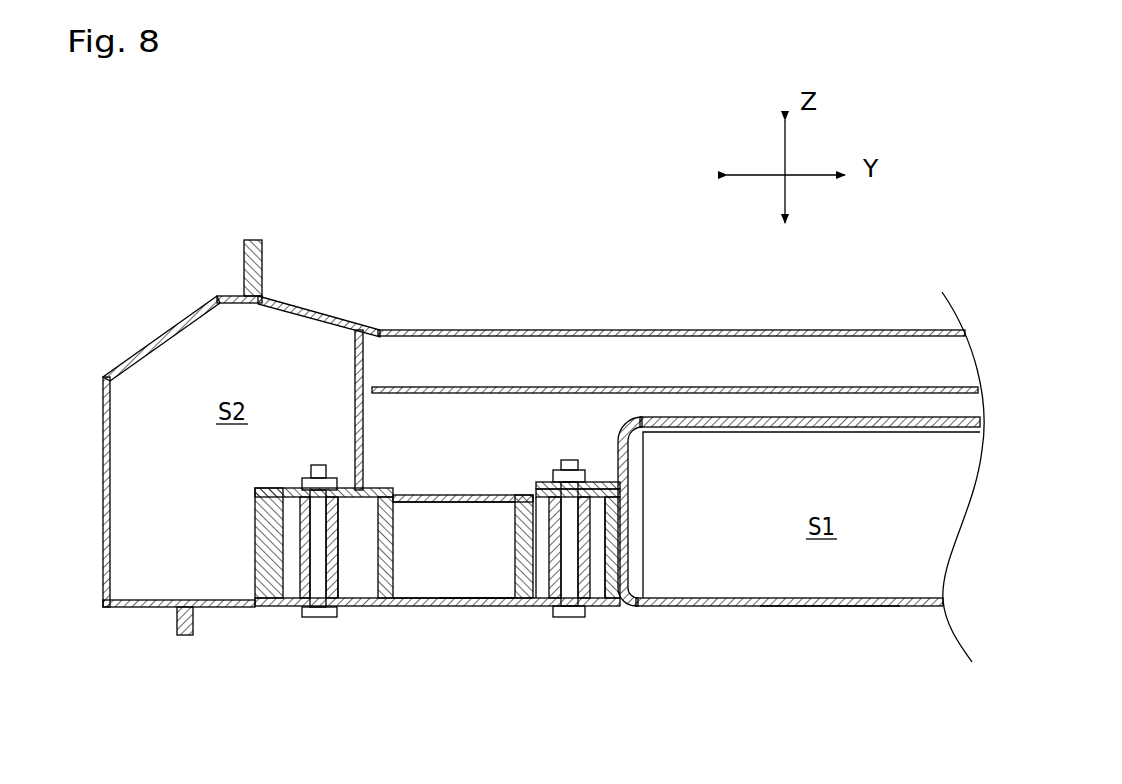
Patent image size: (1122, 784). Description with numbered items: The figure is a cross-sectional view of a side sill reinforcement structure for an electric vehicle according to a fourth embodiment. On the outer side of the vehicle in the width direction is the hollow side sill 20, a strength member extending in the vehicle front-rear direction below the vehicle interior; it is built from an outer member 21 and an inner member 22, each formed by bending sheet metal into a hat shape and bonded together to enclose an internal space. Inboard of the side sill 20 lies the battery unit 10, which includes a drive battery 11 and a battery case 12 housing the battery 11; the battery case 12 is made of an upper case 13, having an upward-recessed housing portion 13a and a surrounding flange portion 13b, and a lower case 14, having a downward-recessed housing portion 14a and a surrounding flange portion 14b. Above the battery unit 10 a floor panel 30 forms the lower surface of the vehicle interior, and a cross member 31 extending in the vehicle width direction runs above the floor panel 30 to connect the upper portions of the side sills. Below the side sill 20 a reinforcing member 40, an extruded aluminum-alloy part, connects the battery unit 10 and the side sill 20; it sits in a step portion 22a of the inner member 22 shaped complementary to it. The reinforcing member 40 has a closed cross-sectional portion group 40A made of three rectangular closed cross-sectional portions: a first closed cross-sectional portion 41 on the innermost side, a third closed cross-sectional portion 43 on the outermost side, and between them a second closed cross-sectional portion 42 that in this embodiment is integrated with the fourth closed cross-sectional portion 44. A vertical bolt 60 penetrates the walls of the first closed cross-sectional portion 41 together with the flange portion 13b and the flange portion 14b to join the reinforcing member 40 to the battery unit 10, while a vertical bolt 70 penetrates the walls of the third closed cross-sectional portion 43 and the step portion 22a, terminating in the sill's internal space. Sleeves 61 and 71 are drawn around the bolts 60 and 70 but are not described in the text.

The battery unit 10 is at (916, 705).
The drive battery 11 is at (893, 567).
The battery case 12 is at (813, 608).
The upper case 13 is at (701, 250).
The housing portion 13a is at (688, 417).
The flange portion 13b is at (586, 588).
The lower case 14 is at (733, 722).
The housing portion 14a is at (697, 608).
The flange portion 14b is at (620, 601).
The side sill 20 is at (320, 166).
The outer member 21 is at (208, 296).
The inner member 22 is at (271, 296).
The step portion 22a is at (253, 497).
The floor panel 30 is at (438, 387).
The cross member 31 is at (415, 330).
The reinforcing member 40 is at (415, 624).
The closed cross-sectional portion group 40A is at (474, 622).
The first closed cross-sectional portion 41 is at (513, 497).
The second closed cross-sectional portion 42 is at (492, 565).
The third closed cross-sectional portion 43 is at (374, 547).
The fourth closed cross-sectional portion 44 is at (454, 550).
The bolt 60 is at (572, 618).
The collar 61 is at (546, 606).
The bolt 70 is at (318, 618).
The collar 71 is at (340, 577).